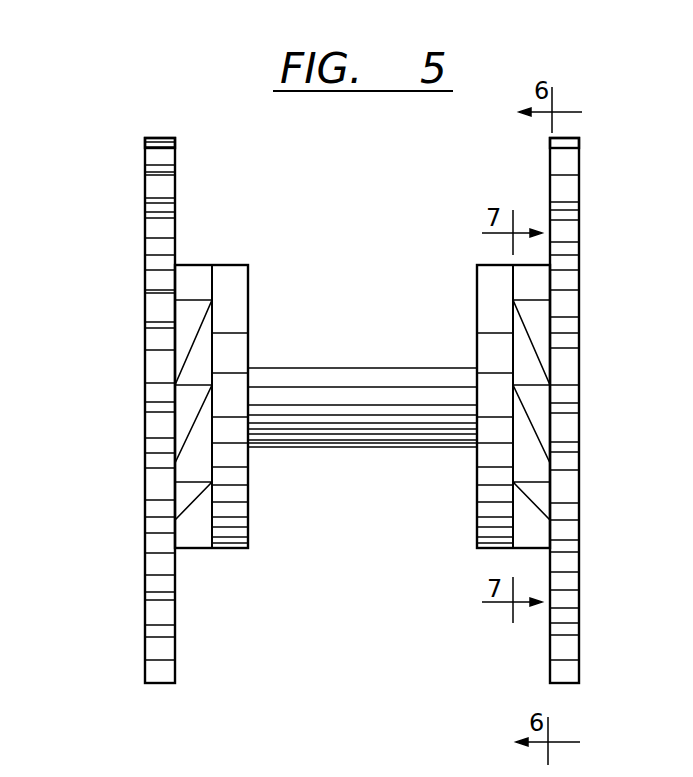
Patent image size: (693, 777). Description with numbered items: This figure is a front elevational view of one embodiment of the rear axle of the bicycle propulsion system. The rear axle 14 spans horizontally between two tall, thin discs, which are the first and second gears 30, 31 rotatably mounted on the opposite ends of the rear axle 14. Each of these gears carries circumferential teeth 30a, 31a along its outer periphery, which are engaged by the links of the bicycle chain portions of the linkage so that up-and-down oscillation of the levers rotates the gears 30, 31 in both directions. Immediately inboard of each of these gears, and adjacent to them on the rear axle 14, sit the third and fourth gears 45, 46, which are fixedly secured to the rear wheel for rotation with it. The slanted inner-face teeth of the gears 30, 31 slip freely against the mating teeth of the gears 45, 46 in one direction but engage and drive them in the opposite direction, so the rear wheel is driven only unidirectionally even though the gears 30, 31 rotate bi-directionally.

The rear axle 14 is at (347, 409).
The first gear 30 is at (158, 263).
The circumferential teeth 30a is at (155, 137).
The second gear 31 is at (567, 235).
The circumferential teeth 31a is at (573, 162).
The third gear 45 is at (223, 298).
The fourth gear 46 is at (488, 293).